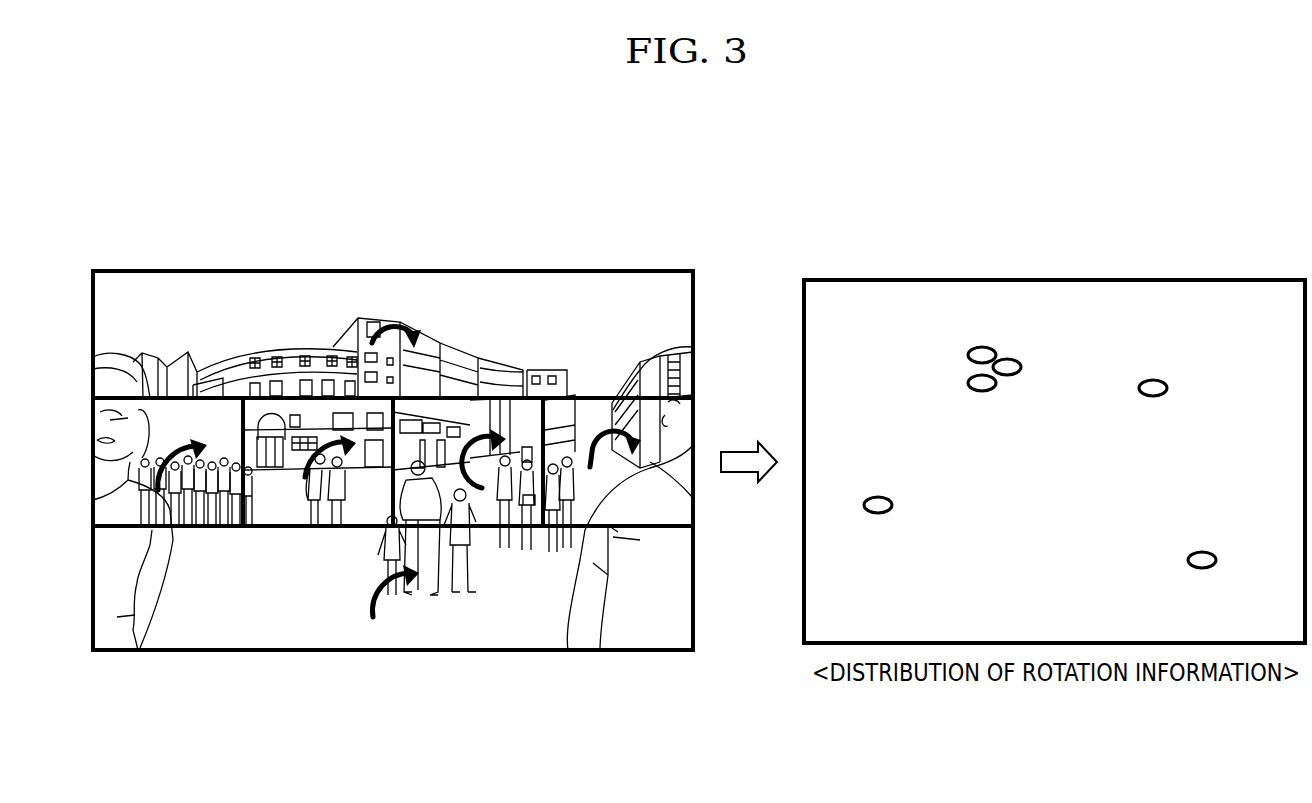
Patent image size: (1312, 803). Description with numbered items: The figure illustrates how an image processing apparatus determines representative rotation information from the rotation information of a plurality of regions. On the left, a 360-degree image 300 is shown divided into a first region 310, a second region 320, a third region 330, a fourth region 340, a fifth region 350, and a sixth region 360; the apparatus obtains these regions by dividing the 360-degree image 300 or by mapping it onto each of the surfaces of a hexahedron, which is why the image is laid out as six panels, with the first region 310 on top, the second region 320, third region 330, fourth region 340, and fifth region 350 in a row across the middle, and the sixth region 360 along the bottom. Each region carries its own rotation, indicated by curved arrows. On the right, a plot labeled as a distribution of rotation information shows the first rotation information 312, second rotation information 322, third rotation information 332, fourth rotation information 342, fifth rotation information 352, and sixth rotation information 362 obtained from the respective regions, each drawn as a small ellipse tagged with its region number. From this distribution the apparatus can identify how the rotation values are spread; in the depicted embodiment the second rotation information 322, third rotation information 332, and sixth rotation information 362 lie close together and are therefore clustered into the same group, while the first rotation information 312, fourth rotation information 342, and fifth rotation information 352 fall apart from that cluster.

The 360-degree image 300 is at (623, 272).
The first region 310 is at (199, 282).
The second region 320 is at (158, 397).
The third region 330 is at (318, 410).
The fourth region 340 is at (466, 410).
The fifth region 350 is at (597, 410).
The sixth region 360 is at (201, 637).
The first rotation information 312 is at (878, 497).
The second rotation information 322 is at (982, 347).
The third rotation information 332 is at (1015, 359).
The fourth rotation information 342 is at (1153, 380).
The fifth rotation information 352 is at (1202, 552).
The sixth rotation information 362 is at (990, 391).